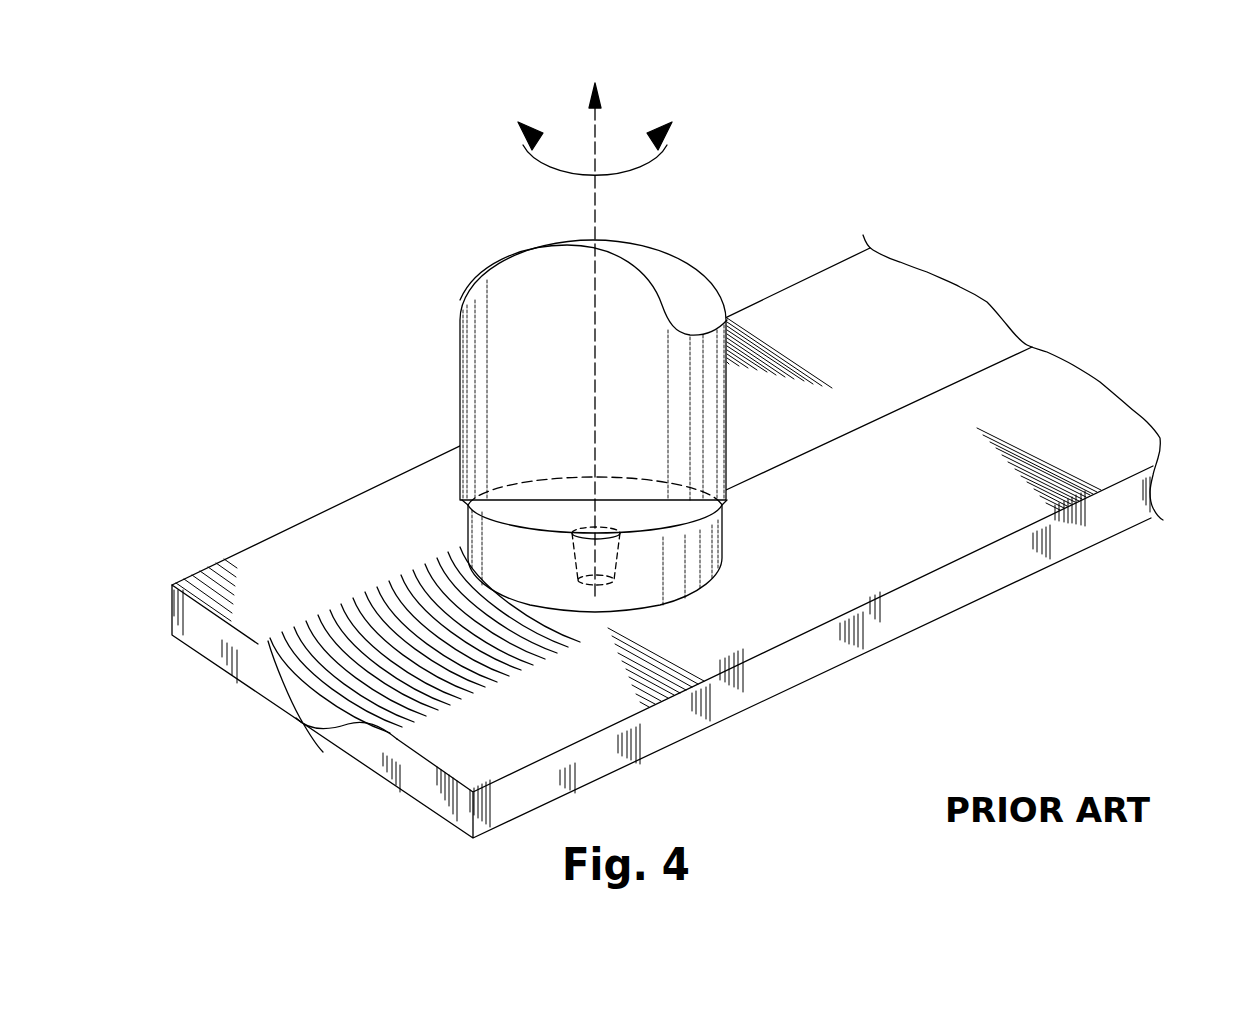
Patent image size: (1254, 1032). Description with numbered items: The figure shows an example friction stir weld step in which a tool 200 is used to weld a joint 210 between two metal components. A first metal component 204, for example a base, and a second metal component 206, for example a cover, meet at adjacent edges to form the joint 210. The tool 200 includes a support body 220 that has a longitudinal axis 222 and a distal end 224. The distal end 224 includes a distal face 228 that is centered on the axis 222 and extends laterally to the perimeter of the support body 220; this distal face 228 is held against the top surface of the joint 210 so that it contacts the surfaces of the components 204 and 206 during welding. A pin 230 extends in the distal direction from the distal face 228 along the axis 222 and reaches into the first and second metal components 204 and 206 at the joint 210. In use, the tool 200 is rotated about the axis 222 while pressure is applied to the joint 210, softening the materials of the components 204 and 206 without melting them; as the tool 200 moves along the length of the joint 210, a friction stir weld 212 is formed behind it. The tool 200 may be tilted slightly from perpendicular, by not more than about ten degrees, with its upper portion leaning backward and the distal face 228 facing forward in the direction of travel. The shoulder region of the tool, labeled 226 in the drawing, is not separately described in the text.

The tool 200 is at (620, 454).
The first metal component 204 is at (912, 342).
The second metal component 206 is at (955, 476).
The joint 210 is at (1030, 348).
The friction stir weld 212 is at (318, 708).
The support body 220 is at (517, 292).
The longitudinal axis 222 is at (595, 326).
The distal end 224 is at (461, 532).
The shoulder 226 is at (719, 568).
The distal face 228 is at (686, 598).
The pin 230 is at (610, 553).